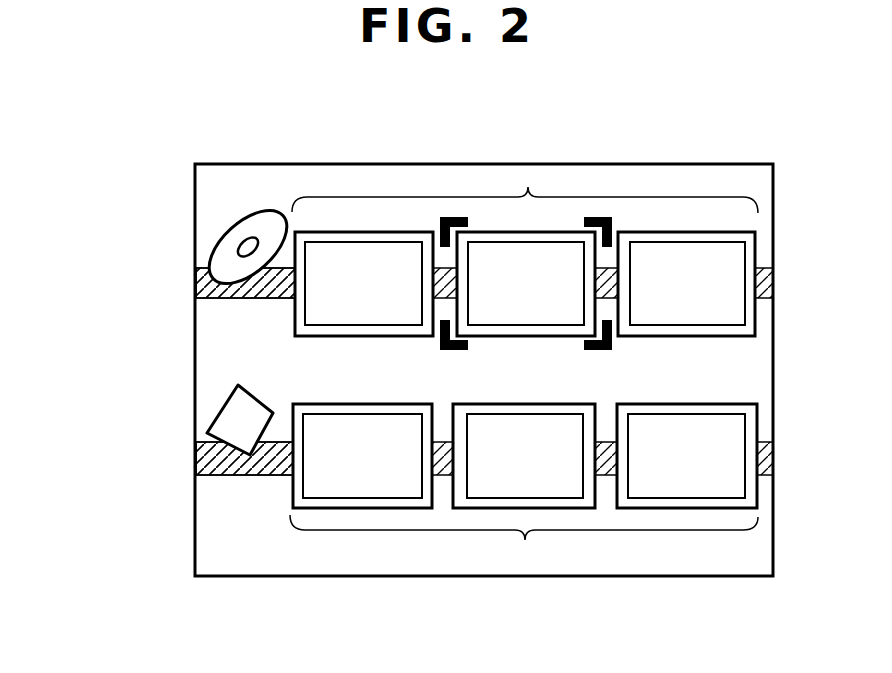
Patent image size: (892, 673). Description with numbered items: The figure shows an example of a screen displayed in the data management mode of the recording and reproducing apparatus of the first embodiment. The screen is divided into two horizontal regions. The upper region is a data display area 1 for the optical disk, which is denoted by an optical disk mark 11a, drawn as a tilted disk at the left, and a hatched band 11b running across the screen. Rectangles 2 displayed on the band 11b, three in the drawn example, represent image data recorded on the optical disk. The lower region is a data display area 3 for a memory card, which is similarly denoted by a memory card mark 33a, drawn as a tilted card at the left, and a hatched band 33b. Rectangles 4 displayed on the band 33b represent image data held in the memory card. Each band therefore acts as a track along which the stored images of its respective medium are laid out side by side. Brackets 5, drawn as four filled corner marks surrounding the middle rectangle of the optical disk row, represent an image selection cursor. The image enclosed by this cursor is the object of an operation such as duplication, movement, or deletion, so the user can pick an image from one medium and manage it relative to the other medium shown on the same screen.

The data display area on optical disk 1 is at (180, 283).
The rectangles 2 is at (528, 188).
The data display area in memory card 3 is at (180, 458).
The rectangles 4 is at (525, 540).
The brackets 5 is at (450, 216).
The optical disk mark 11a is at (232, 232).
The band 11b is at (244, 299).
The memory card mark 33a is at (224, 399).
The band 33b is at (246, 469).